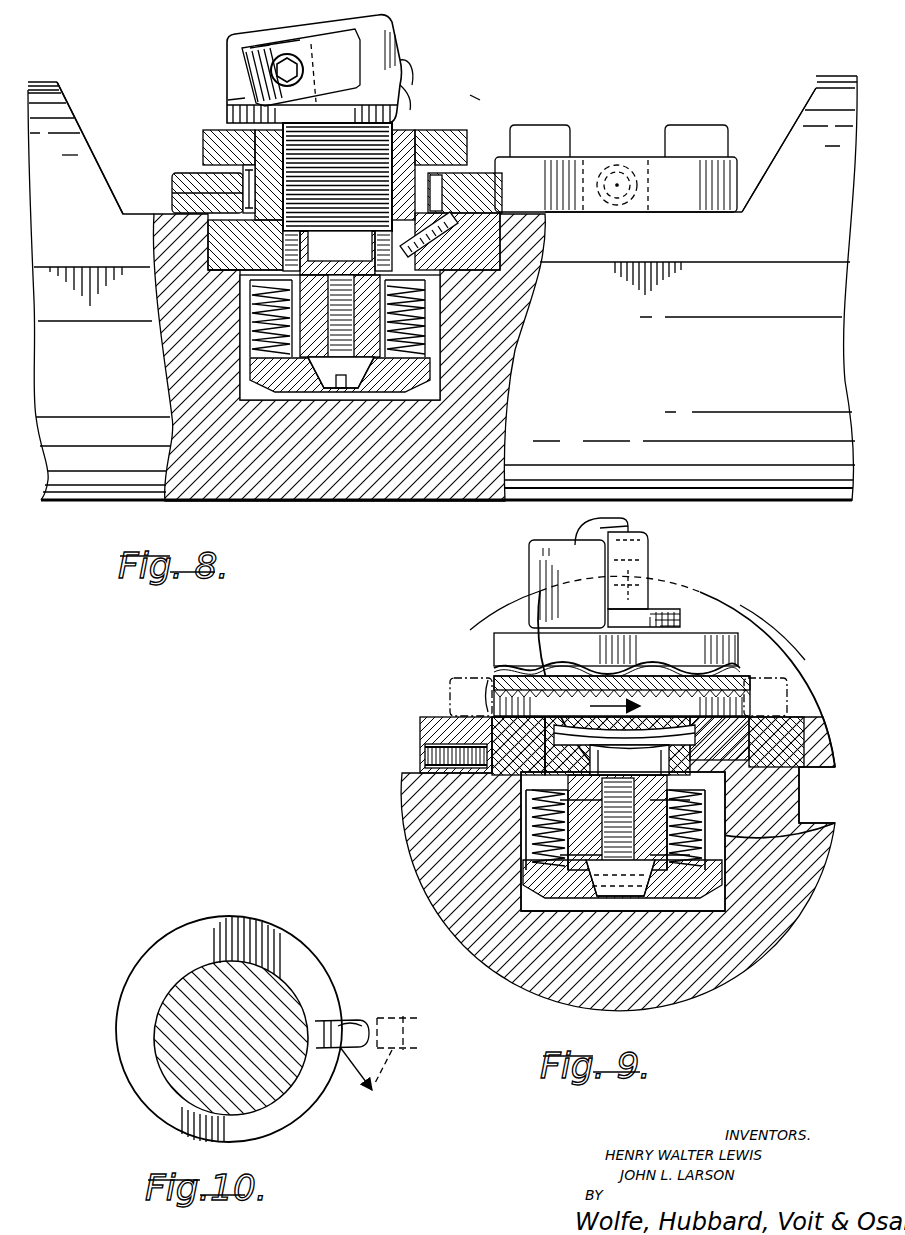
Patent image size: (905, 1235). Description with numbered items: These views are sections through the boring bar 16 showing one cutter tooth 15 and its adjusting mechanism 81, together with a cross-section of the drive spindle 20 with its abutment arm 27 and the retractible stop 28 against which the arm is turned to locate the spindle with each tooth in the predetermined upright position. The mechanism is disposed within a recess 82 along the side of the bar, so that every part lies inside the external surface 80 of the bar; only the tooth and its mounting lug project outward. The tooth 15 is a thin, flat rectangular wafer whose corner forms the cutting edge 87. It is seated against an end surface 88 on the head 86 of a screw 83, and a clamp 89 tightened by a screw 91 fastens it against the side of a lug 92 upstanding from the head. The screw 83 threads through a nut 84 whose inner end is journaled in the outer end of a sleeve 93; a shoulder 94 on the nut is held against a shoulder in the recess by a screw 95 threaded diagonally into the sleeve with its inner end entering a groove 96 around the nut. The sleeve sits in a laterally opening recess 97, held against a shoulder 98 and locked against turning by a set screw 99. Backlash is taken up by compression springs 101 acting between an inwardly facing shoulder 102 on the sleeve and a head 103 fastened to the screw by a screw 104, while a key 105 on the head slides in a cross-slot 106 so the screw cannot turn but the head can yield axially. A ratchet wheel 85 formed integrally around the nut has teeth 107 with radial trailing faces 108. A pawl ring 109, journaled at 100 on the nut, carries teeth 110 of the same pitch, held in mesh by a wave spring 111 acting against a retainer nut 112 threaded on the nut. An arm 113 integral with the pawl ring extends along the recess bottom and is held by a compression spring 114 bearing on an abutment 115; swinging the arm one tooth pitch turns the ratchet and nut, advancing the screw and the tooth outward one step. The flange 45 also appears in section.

In FIG. 8, the cutting tooth 15 is at (392, 68).
In FIG. 9, the cutting tooth 15 is at (600, 528).
In FIG. 8, the boring bar 16 is at (612, 376).
In FIG. 9, the boring bar 16 is at (430, 878).
In FIG. 10, the drive spindle 20 is at (160, 1067).
In FIG. 10, the abutment arm 27 is at (366, 1020).
In FIG. 10, the retractible stop 28 is at (380, 1059).
In FIG. 8, the roller flange 45 is at (752, 266).
In FIG. 9, the roller flange 45 is at (812, 825).
In FIG. 8, the external surface 80 is at (42, 82).
In FIG. 9, the external surface 80 is at (518, 610).
In FIG. 8, the adjusting mechanism 81 is at (480, 92).
In FIG. 9, the adjusting mechanism 81 is at (446, 700).
In FIG. 8, the recess 82 is at (82, 140).
In FIG. 9, the recess 82 is at (788, 712).
In FIG. 8, the screw 83 is at (398, 116).
In FIG. 8, the nut 84 is at (440, 130).
In FIG. 9, the nut 84 is at (688, 758).
In FIG. 8, the ratchet wheel 85 is at (208, 243).
In FIG. 9, the ratchet wheel 85 is at (748, 680).
In FIG. 8, the head 86 is at (398, 92).
In FIG. 9, the head 86 is at (668, 610).
In FIG. 8, the cutting edge 87 is at (388, 20).
In FIG. 8, the end surface 88 is at (392, 74).
In FIG. 8, the clamp 89 is at (260, 78).
In FIG. 9, the clamp 89 is at (640, 572).
In FIG. 8, the screw 91 is at (250, 48).
In FIG. 8, the lug 92 is at (228, 100).
In FIG. 9, the lug 92 is at (548, 562).
In FIG. 8, the sleeve 93 is at (432, 272).
In FIG. 9, the sleeve 93 is at (745, 768).
In FIG. 8, the shoulder 94 is at (240, 270).
In FIG. 8, the screw 95 is at (455, 230).
In FIG. 8, the groove 96 is at (246, 281).
In FIG. 8, the recess 97 is at (416, 400).
In FIG. 9, the recess 97 is at (688, 908).
In FIG. 9, the shoulder 98 is at (520, 770).
In FIG. 9, the set screw 99 is at (428, 750).
In FIG. 8, the journal 100 is at (203, 134).
In FIG. 8, the compression springs 101 is at (252, 340).
In FIG. 9, the compression springs 101 is at (540, 842).
In FIG. 9, the shoulder 102 is at (695, 812).
In FIG. 9, the head 103 is at (700, 898).
In FIG. 8, the screw 104 is at (342, 390).
In FIG. 9, the screw 104 is at (616, 896).
In FIG. 8, the key 105 is at (276, 394).
In FIG. 9, the key 105 is at (540, 870).
In FIG. 8, the cross-slot 106 is at (337, 199).
In FIG. 9, the cross-slot 106 is at (535, 812).
In FIG. 9, the teeth 107 is at (740, 680).
In FIG. 9, the trailing faces 108 is at (617, 657).
In FIG. 8, the ring 109 is at (215, 178).
In FIG. 9, the ring 109 is at (495, 720).
In FIG. 9, the teeth 110 is at (540, 648).
In FIG. 8, the spring 111 is at (203, 194).
In FIG. 9, the spring 111 is at (520, 668).
In FIG. 8, the retainer nut 112 is at (498, 157).
In FIG. 9, the retainer nut 112 is at (712, 632).
In FIG. 8, the arm 113 is at (575, 205).
In FIG. 8, the compression spring 114 is at (620, 168).
In FIG. 8, the abutment 115 is at (686, 205).